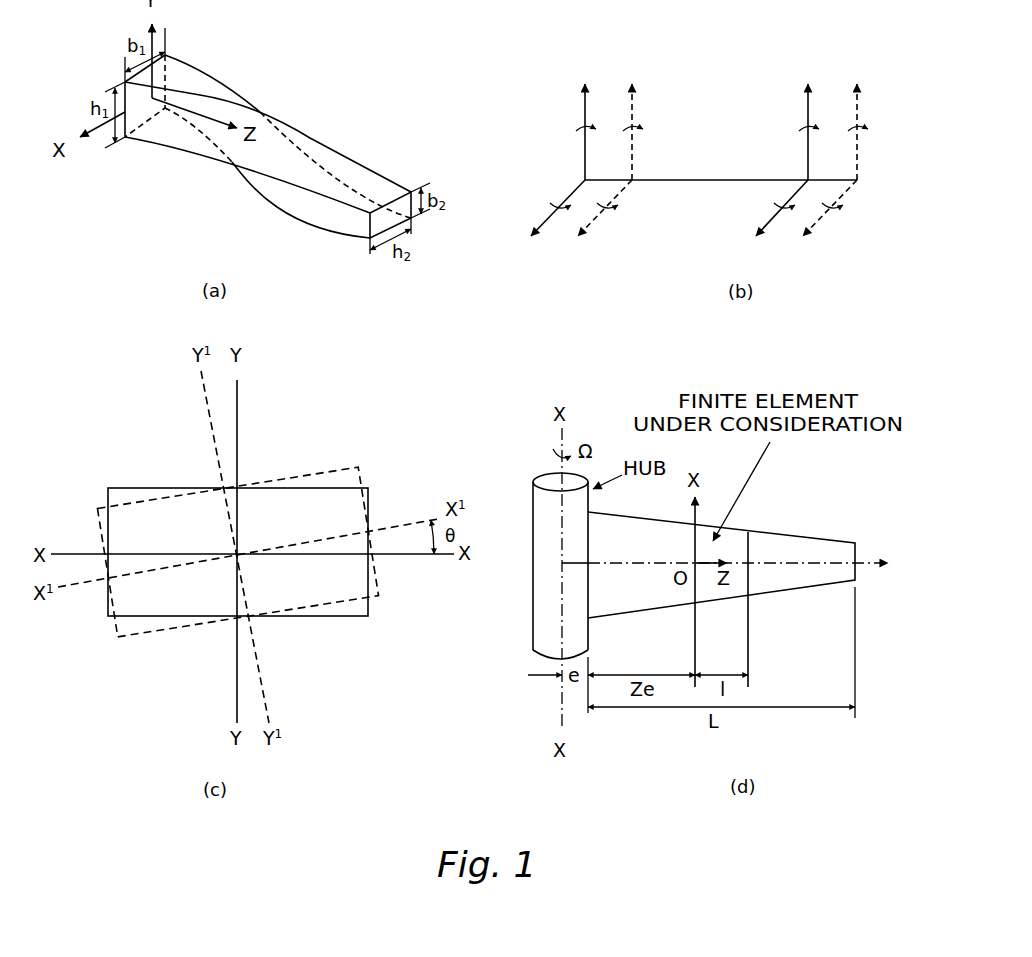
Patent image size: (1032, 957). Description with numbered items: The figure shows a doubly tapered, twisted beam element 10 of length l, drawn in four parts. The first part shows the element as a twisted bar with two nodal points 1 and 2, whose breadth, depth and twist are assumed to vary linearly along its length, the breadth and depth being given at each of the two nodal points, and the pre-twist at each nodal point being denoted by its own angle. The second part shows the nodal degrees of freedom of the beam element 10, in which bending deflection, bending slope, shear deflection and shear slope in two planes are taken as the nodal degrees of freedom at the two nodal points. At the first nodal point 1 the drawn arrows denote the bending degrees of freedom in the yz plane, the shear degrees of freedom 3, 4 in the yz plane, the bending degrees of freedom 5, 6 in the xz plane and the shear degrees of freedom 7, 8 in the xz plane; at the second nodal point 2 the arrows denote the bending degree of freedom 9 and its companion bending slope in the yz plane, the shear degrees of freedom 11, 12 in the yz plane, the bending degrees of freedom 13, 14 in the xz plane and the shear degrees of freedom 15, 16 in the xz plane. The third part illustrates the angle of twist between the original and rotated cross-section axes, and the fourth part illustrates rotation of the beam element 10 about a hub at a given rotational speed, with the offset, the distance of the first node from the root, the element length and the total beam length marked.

The nodal point 1 is at (584, 118).
The nodal point 2 is at (574, 129).
The shear degree of freedom u3 3 is at (631, 118).
The shear degree of freedom u4 4 is at (645, 129).
The bending degree of freedom u5 5 is at (548, 221).
The bending degree of freedom u6 6 is at (551, 195).
The shear degree of freedom u7 7 is at (595, 221).
The shear degree of freedom u8 8 is at (619, 207).
The bending degree of freedom u9 9 is at (807, 118).
The beam element 10 is at (794, 129).
The shear degree of freedom u11 11 is at (856, 118).
The shear degree of freedom u12 12 is at (873, 129).
The bending degree of freedom u13 13 is at (769, 221).
The bending degree of freedom u14 14 is at (771, 199).
The shear degree of freedom u15 15 is at (817, 221).
The shear degree of freedom u16 16 is at (848, 207).